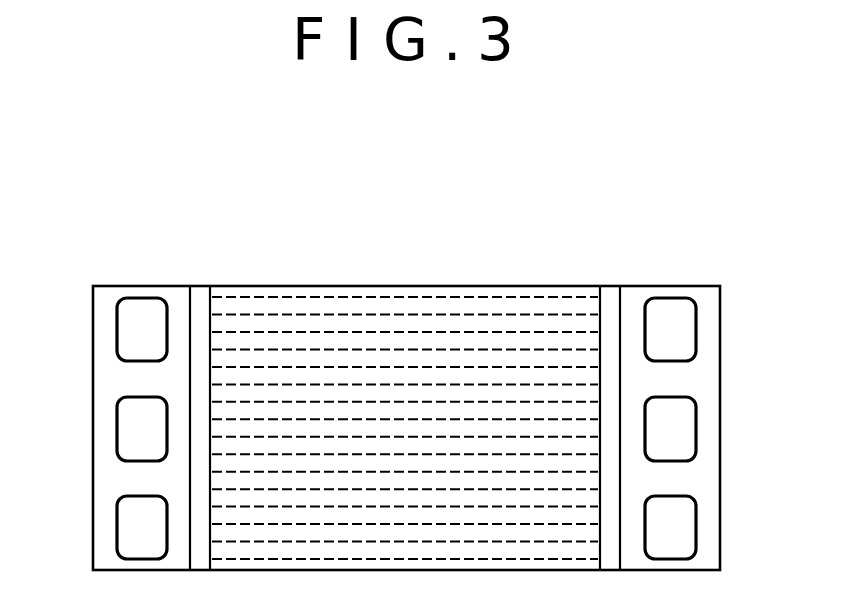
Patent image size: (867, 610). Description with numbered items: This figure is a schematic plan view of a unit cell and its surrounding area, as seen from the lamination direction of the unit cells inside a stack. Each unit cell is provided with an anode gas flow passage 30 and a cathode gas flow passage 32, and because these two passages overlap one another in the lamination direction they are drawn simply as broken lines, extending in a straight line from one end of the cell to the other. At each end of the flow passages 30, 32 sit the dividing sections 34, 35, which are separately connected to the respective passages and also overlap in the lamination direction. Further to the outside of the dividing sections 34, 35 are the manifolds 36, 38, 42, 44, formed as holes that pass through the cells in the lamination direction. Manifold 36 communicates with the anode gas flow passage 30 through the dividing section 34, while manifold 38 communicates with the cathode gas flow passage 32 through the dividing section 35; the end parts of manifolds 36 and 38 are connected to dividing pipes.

The anode gas flow passage 30 is at (405, 395).
The cathode gas flow passage 32 is at (372, 322).
The dividing section 34 is at (429, 400).
The dividing section 35 is at (200, 304).
The manifold 36 is at (130, 332).
The manifold 38 is at (672, 335).
The manifold 42 is at (672, 534).
The manifold 44 is at (130, 531).